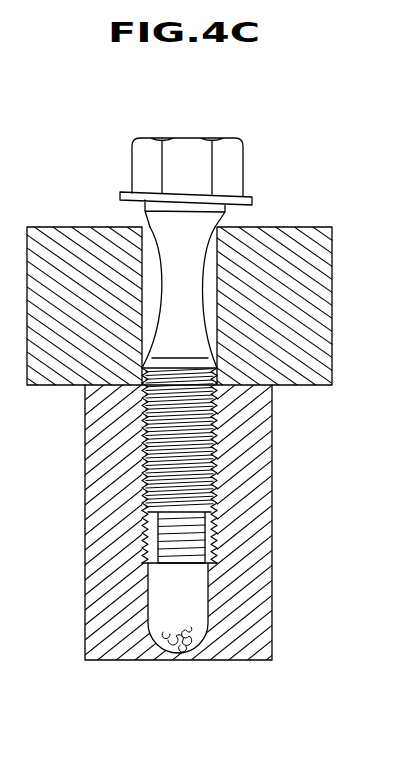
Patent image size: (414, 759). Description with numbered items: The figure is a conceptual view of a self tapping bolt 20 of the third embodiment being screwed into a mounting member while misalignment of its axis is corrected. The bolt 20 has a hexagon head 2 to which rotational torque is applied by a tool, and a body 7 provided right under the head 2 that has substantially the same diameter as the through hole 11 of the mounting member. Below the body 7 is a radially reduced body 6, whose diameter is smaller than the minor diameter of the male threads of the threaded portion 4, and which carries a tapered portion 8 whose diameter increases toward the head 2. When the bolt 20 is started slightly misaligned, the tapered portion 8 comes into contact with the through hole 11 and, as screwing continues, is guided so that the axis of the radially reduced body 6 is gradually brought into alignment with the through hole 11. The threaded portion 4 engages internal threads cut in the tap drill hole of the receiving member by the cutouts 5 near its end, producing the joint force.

The bolt 20 is at (187, 309).
The head 2 is at (244, 167).
The body 7 is at (145, 210).
The tapered portion 8 is at (160, 242).
The through hole 11 is at (205, 256).
The radially reduced body 6 is at (186, 343).
The threaded portion 4 is at (193, 485).
The cutouts 5 is at (142, 527).